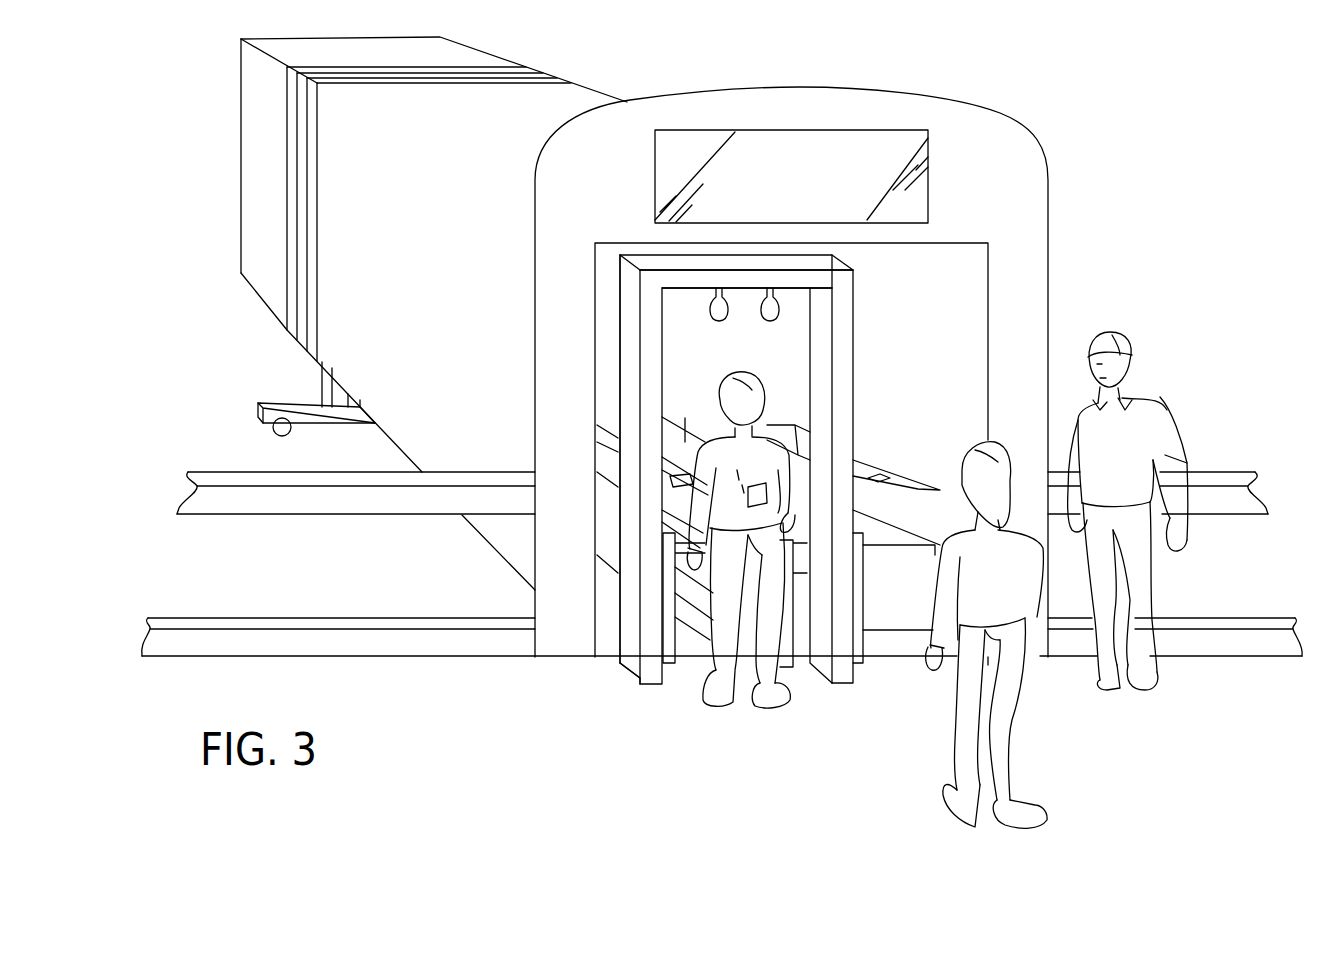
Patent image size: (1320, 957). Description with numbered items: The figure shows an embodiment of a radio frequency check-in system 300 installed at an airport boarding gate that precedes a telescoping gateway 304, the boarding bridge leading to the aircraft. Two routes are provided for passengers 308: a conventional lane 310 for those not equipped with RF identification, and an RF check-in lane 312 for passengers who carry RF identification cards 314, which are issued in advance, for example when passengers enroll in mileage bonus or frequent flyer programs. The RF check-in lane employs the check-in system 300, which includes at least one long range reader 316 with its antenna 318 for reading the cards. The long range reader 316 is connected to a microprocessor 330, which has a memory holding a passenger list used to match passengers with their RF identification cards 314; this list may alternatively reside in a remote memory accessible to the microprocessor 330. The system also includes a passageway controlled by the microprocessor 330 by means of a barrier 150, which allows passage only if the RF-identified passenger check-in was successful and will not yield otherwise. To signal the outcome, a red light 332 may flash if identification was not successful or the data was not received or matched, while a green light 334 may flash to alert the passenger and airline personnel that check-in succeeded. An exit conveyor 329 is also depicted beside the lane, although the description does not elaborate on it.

The radio frequency check-in system 300 is at (598, 806).
The telescoping gateway 304 is at (265, 180).
The passengers 308 is at (767, 707).
The conventional lane 310 is at (1074, 247).
The RF check-in lane 312 is at (742, 278).
The RF identification cards 314 is at (741, 540).
The long range reader 316 is at (710, 501).
The antenna 318 is at (617, 663).
The exit conveyor 329 is at (888, 607).
The microprocessor 330 is at (673, 467).
The red light 332 is at (711, 305).
The green light 334 is at (773, 301).
The barrier 150 is at (700, 593).